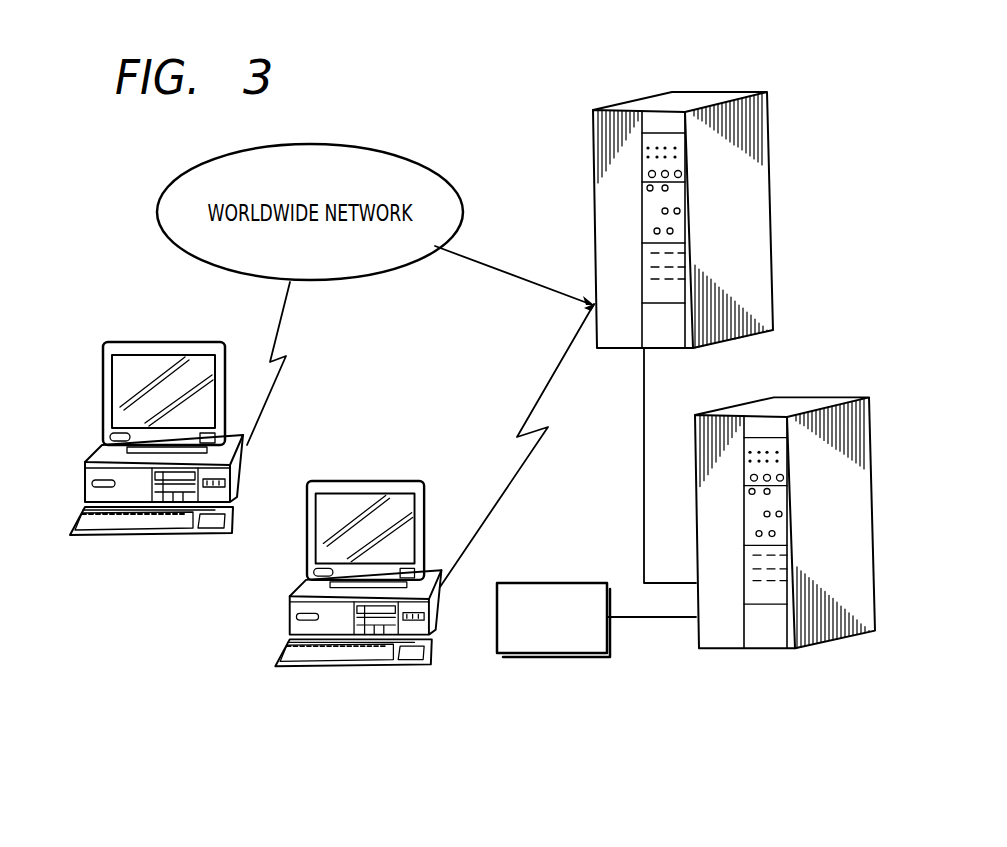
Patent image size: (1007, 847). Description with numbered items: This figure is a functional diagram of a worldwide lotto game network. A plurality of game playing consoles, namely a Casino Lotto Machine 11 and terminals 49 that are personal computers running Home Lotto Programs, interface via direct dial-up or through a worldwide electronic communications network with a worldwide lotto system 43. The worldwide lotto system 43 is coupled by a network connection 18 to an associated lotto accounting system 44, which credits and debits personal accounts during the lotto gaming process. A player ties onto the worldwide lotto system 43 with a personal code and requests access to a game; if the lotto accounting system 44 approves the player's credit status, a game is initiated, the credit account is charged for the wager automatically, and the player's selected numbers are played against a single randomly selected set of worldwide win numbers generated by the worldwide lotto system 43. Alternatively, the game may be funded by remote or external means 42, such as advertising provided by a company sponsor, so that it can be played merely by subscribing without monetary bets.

The Casino Lotto Machine 11 is at (105, 455).
The terminals 49 is at (213, 596).
The worldwide lotto system 43 is at (680, 100).
The lotto accounting system 44 is at (720, 630).
The local network connection 18 is at (645, 388).
The remote or external means 42 is at (550, 583).